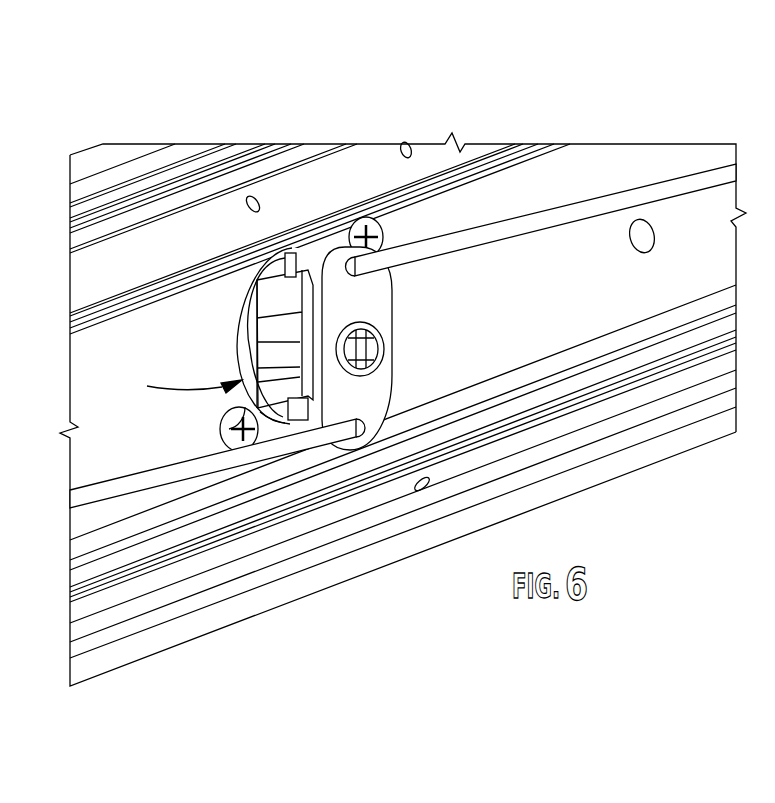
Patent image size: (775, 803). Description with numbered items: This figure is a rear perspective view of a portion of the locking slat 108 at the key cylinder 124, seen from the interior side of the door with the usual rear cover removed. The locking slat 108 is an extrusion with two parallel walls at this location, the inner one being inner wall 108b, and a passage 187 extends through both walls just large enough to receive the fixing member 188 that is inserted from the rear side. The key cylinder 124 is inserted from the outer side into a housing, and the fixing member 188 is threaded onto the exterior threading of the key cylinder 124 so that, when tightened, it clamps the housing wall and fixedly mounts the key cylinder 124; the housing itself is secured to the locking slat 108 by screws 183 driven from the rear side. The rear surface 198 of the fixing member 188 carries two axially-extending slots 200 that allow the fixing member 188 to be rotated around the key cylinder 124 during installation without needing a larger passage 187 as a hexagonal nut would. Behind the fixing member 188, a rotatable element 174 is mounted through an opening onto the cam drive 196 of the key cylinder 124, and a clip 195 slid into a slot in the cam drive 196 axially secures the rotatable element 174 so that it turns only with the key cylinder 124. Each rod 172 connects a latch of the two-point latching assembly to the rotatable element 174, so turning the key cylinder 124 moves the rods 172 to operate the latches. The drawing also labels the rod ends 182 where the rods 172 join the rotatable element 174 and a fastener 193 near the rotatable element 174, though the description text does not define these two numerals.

The locking slat 108 is at (518, 190).
The inner wall 108b is at (213, 333).
The key cylinder 124 is at (272, 357).
The rod 172 is at (597, 205).
The rotatable element 174 is at (367, 293).
The pin 182 is at (347, 256).
The screws 183 is at (220, 420).
The passage 187 is at (280, 420).
The fixing member 188 is at (175, 385).
The screw 193 is at (380, 228).
The clip 195 is at (370, 323).
The cam drive 196 is at (378, 349).
The rear surface 198 is at (241, 330).
The axially-extending slots 200 is at (290, 253).